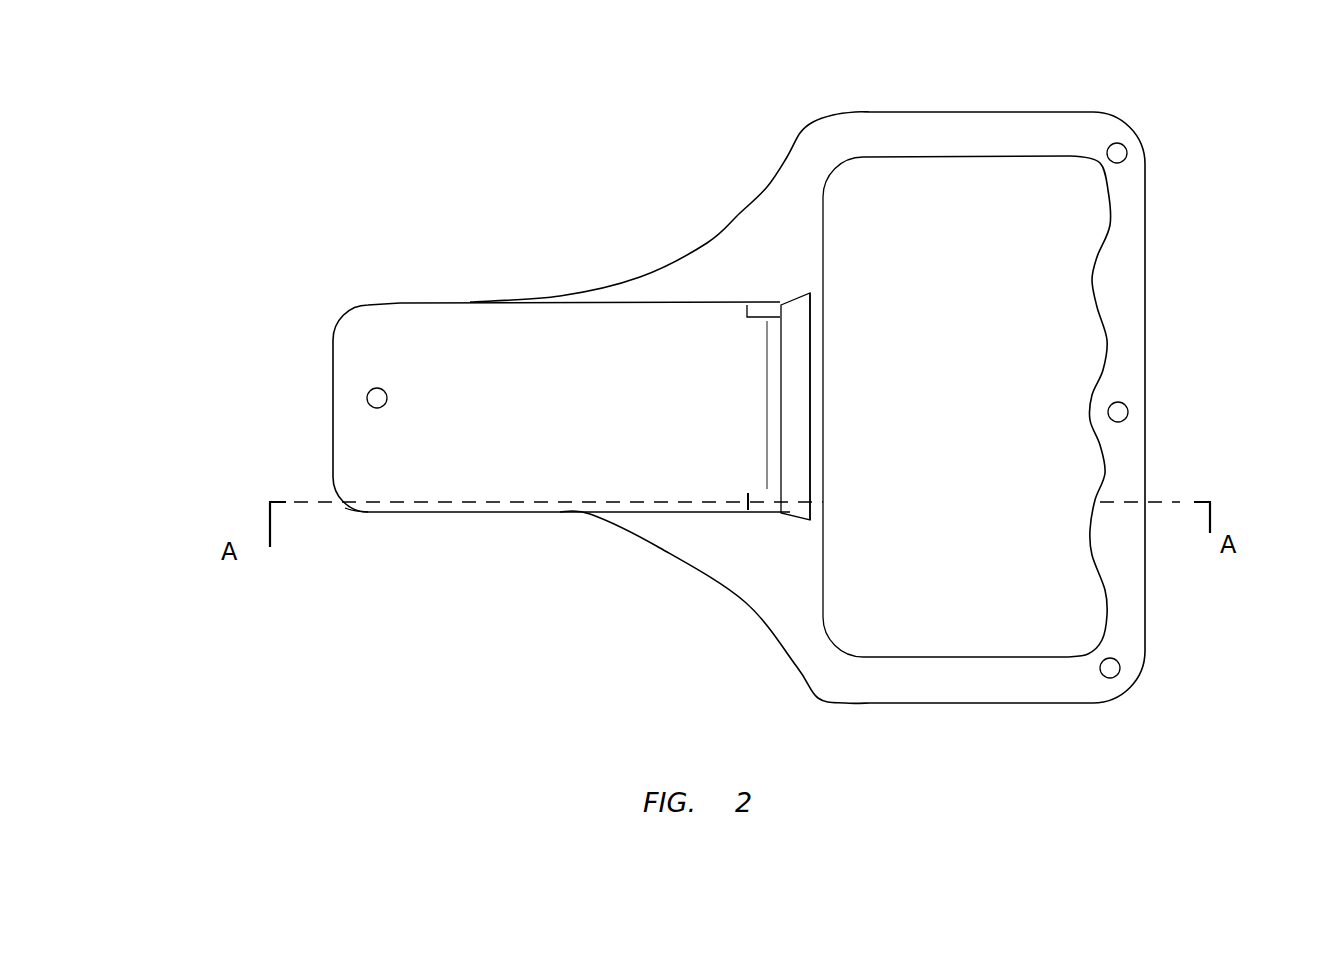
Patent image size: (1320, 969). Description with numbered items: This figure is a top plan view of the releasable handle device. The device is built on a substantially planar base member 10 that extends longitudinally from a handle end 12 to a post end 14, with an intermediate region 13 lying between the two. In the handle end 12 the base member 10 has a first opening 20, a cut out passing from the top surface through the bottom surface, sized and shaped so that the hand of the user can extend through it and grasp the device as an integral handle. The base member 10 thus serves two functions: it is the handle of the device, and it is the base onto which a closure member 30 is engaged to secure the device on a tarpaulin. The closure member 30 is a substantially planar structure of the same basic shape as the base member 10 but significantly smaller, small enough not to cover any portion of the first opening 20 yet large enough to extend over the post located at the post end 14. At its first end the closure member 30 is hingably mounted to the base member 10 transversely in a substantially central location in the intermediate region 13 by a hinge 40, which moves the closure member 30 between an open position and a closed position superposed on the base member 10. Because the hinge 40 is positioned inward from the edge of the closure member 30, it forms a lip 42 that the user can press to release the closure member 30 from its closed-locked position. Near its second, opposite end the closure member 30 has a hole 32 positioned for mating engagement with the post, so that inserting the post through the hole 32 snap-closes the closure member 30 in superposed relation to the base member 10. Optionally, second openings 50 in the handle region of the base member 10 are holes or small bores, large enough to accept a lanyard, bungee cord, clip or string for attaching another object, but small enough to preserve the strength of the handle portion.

The base member 10 is at (880, 442).
The handle end 12 is at (1150, 122).
The intermediate region 13 is at (660, 563).
The post end 14 is at (360, 517).
The first opening 20 is at (957, 657).
The closure member 30 is at (496, 479).
The hole 32 is at (367, 396).
The hinge 40 is at (808, 359).
The lip 42 is at (795, 322).
The second opening 50 is at (1127, 153).